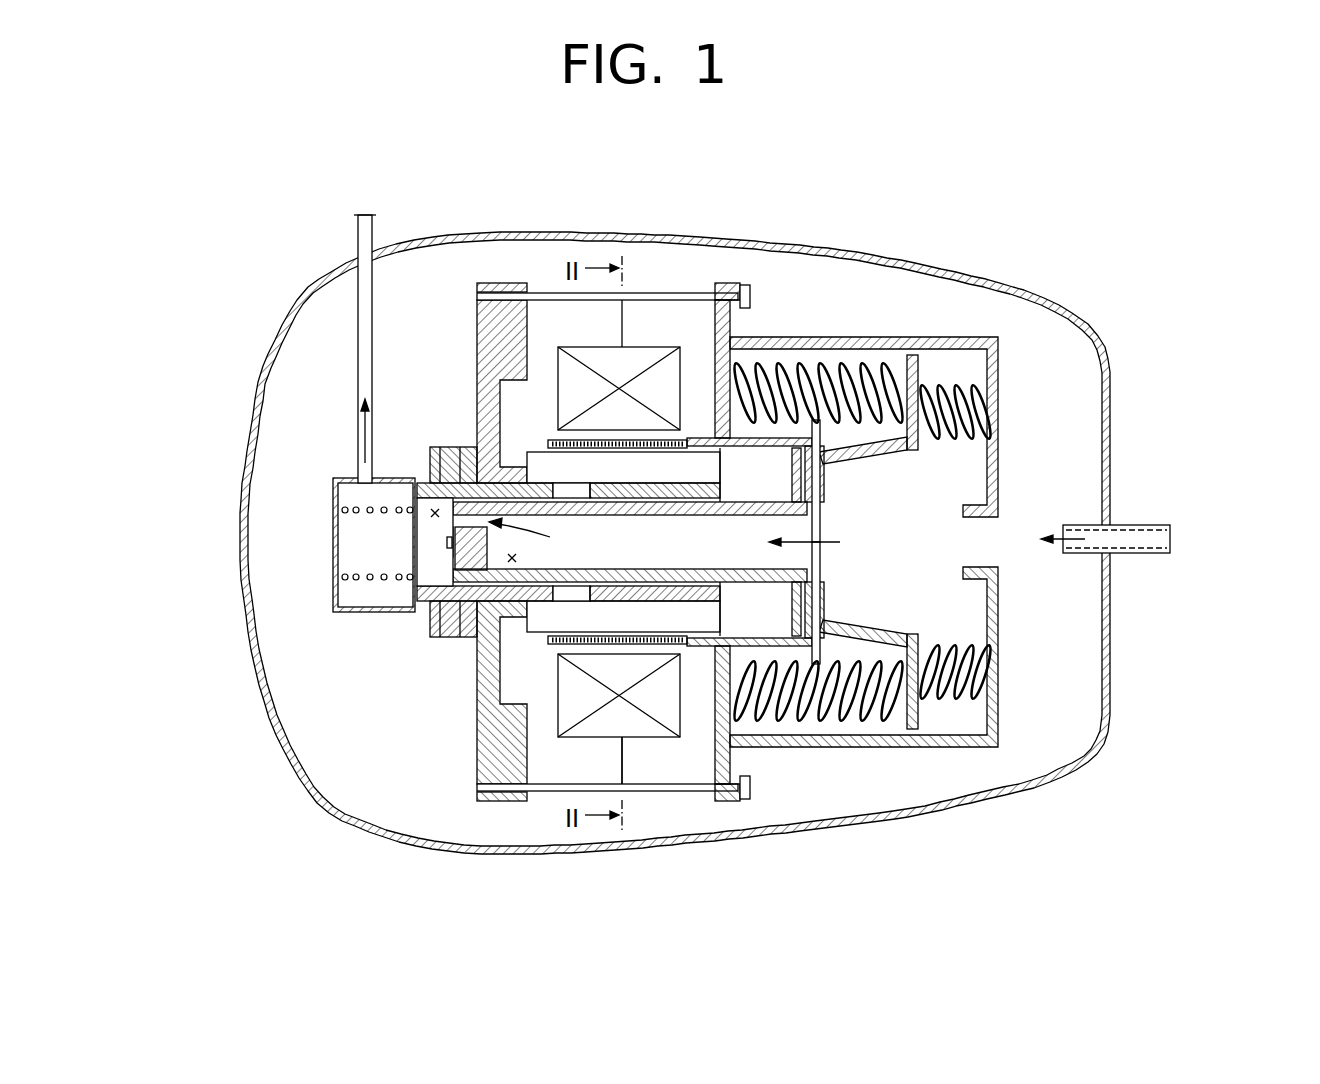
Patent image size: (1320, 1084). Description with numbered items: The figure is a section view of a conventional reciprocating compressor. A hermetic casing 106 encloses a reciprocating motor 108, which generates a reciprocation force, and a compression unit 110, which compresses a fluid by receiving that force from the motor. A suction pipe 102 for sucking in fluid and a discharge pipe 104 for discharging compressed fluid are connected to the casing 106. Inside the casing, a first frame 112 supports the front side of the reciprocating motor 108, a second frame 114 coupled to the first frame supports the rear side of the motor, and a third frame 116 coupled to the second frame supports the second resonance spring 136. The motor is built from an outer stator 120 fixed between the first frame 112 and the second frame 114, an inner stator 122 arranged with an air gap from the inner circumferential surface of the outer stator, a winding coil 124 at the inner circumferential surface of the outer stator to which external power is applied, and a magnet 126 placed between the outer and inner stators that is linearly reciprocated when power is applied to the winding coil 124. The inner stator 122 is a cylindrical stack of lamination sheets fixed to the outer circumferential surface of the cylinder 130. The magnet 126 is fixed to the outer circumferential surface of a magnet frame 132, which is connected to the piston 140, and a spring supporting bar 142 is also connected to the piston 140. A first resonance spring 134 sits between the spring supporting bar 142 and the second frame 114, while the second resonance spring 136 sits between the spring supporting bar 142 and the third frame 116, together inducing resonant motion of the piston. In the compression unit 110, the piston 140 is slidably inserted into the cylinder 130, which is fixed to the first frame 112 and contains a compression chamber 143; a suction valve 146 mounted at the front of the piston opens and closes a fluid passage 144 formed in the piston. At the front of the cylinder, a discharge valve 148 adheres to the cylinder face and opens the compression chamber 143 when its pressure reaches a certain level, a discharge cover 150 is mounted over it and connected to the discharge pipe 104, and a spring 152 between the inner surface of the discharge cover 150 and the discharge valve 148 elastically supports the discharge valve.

The suction pipe 102 is at (1165, 539).
The discharge pipe 104 is at (357, 237).
The hermetic casing 106 is at (302, 316).
The reciprocating motor 108 is at (550, 800).
The compression unit 110 is at (722, 598).
The first frame 112 is at (503, 308).
The second frame 114 is at (715, 360).
The third frame 116 is at (803, 340).
The outer stator 120 is at (607, 763).
The inner stator 122 is at (573, 627).
The winding coil 124 is at (670, 762).
The magnet 126 is at (677, 643).
The cylinder 130 is at (440, 603).
The magnet frame 132 is at (810, 640).
The first resonance spring 134 is at (860, 372).
The second resonance spring 136 is at (965, 390).
The piston 140 is at (455, 578).
The spring supporting bar 142 is at (912, 360).
The compression chamber 143 is at (437, 497).
The fluid passage 144 is at (443, 640).
The suction valve 146 is at (455, 565).
The discharge valve 148 is at (413, 545).
The discharge cover 150 is at (332, 493).
The spring 152 is at (363, 508).